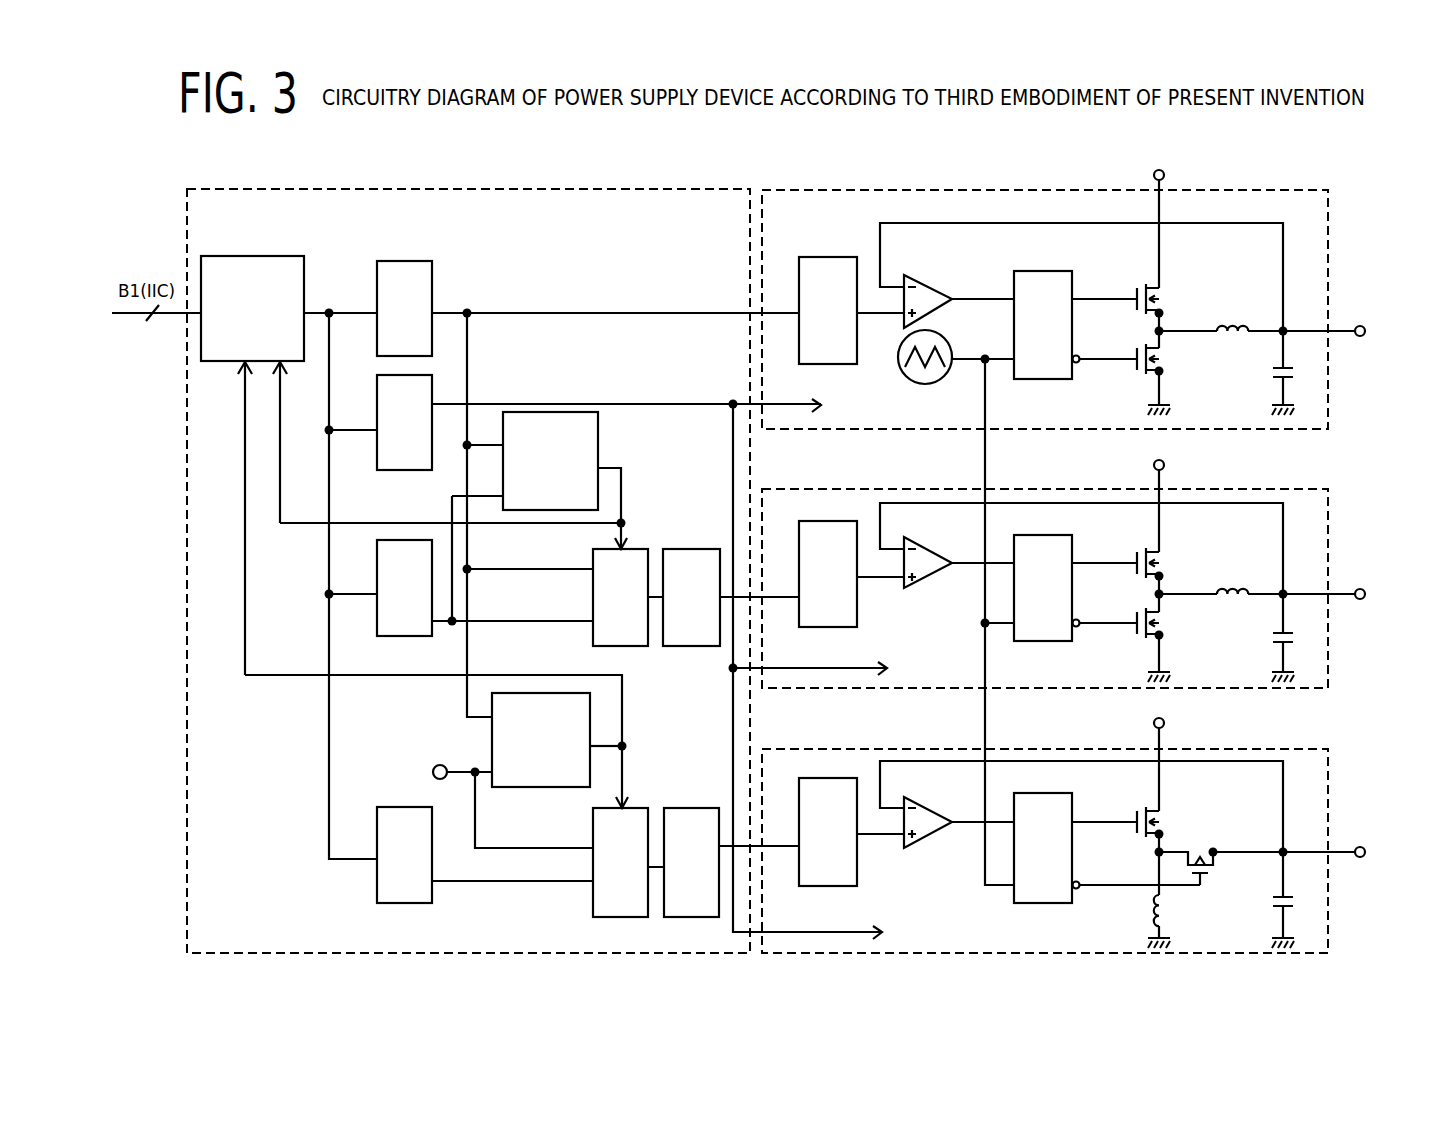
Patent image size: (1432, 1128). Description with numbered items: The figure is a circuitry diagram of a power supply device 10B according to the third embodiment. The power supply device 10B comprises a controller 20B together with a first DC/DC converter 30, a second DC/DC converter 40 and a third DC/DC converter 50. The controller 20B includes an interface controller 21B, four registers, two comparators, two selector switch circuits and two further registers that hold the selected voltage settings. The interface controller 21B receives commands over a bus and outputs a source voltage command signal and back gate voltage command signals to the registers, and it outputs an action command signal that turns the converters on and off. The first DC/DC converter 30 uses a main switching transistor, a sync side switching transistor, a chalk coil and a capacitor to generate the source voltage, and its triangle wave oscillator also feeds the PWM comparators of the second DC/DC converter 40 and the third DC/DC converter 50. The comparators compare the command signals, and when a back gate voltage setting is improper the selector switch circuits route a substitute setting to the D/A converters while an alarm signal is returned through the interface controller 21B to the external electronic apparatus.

The power supply device 10B is at (1272, 172).
The controller 20B is at (372, 189).
The interface controller 21B is at (252, 256).
The first DC/DC converter 30 is at (1328, 236).
The second DC/DC converter 40 is at (1328, 496).
The third DC/DC converter 50 is at (1328, 782).